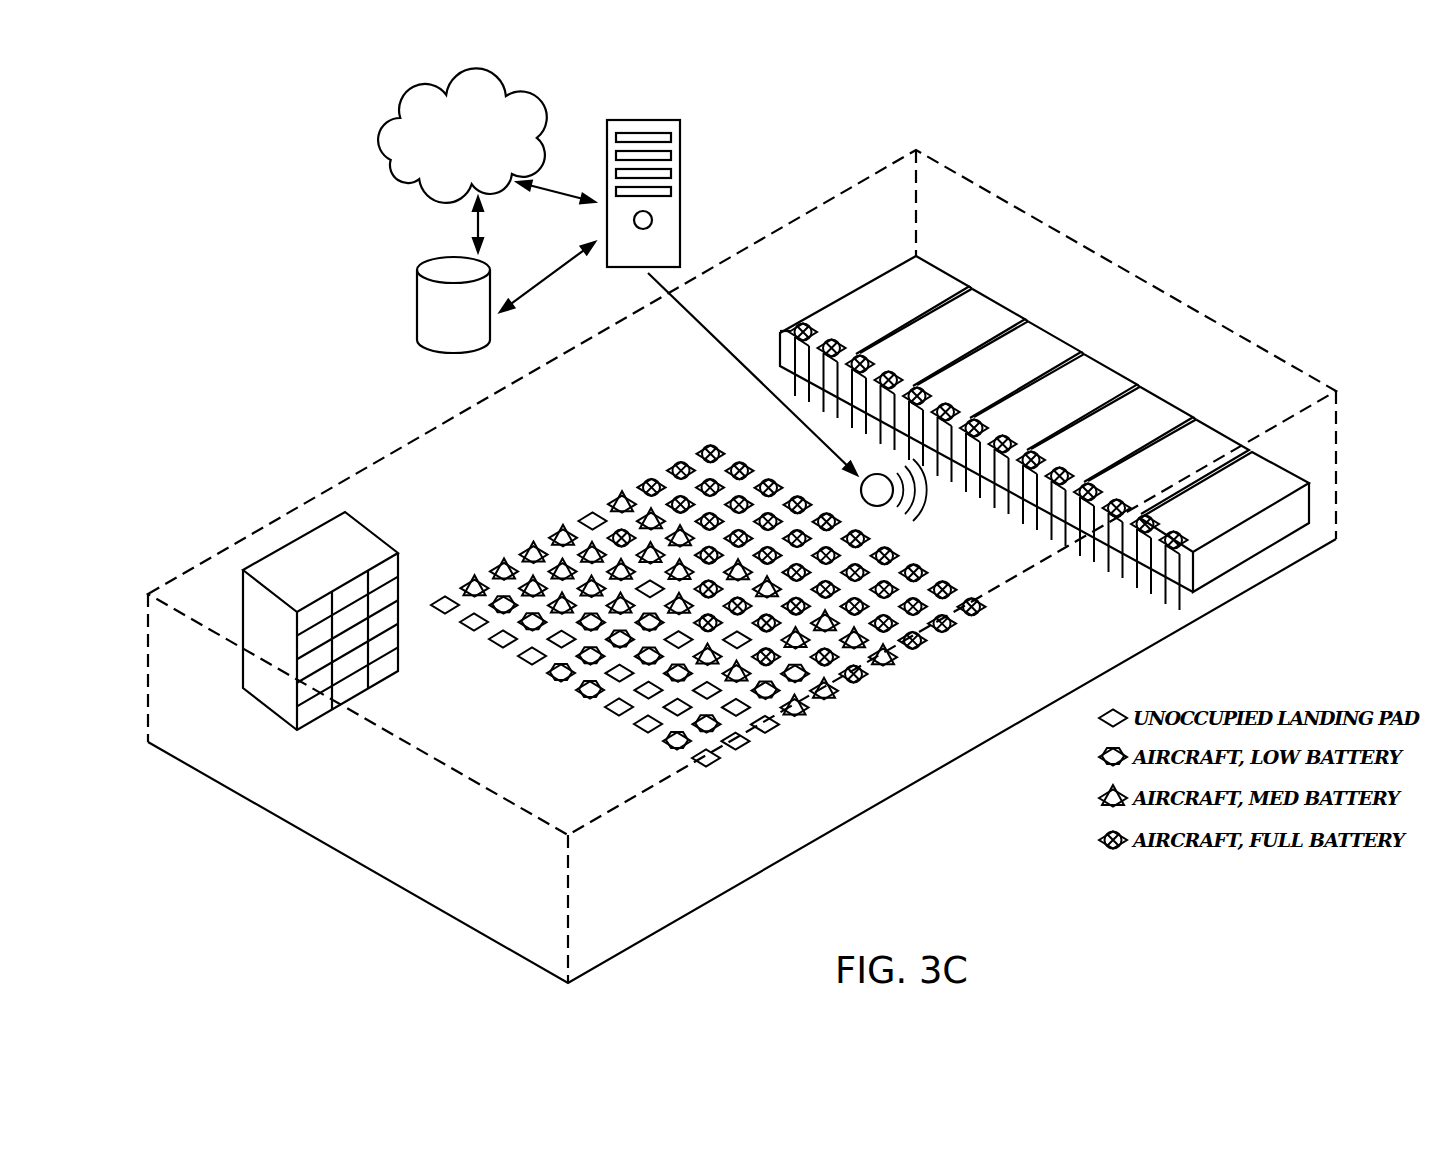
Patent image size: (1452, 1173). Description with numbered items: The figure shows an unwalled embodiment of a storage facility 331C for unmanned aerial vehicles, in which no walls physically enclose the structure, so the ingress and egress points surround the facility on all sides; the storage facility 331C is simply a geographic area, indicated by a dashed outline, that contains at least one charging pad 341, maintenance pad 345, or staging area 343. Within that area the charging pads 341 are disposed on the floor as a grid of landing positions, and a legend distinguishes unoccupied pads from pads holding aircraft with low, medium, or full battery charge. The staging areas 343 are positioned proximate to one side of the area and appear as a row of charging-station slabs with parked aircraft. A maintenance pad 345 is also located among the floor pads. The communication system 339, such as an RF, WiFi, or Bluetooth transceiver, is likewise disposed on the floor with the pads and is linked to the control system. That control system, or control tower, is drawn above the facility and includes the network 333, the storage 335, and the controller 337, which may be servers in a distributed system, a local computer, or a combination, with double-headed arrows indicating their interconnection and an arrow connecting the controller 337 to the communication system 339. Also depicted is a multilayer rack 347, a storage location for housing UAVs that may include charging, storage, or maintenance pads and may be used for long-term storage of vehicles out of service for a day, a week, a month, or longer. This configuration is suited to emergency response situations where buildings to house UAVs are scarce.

The storage facility 331C is at (342, 493).
The network 333 is at (392, 131).
The storage 335 is at (426, 313).
The controller 337 is at (670, 121).
The communication system 339 is at (861, 490).
The charging pads 341 is at (779, 723).
The staging area 343 is at (1138, 548).
The maintenance pad 345 is at (720, 758).
The multilayer rack 347 is at (362, 549).